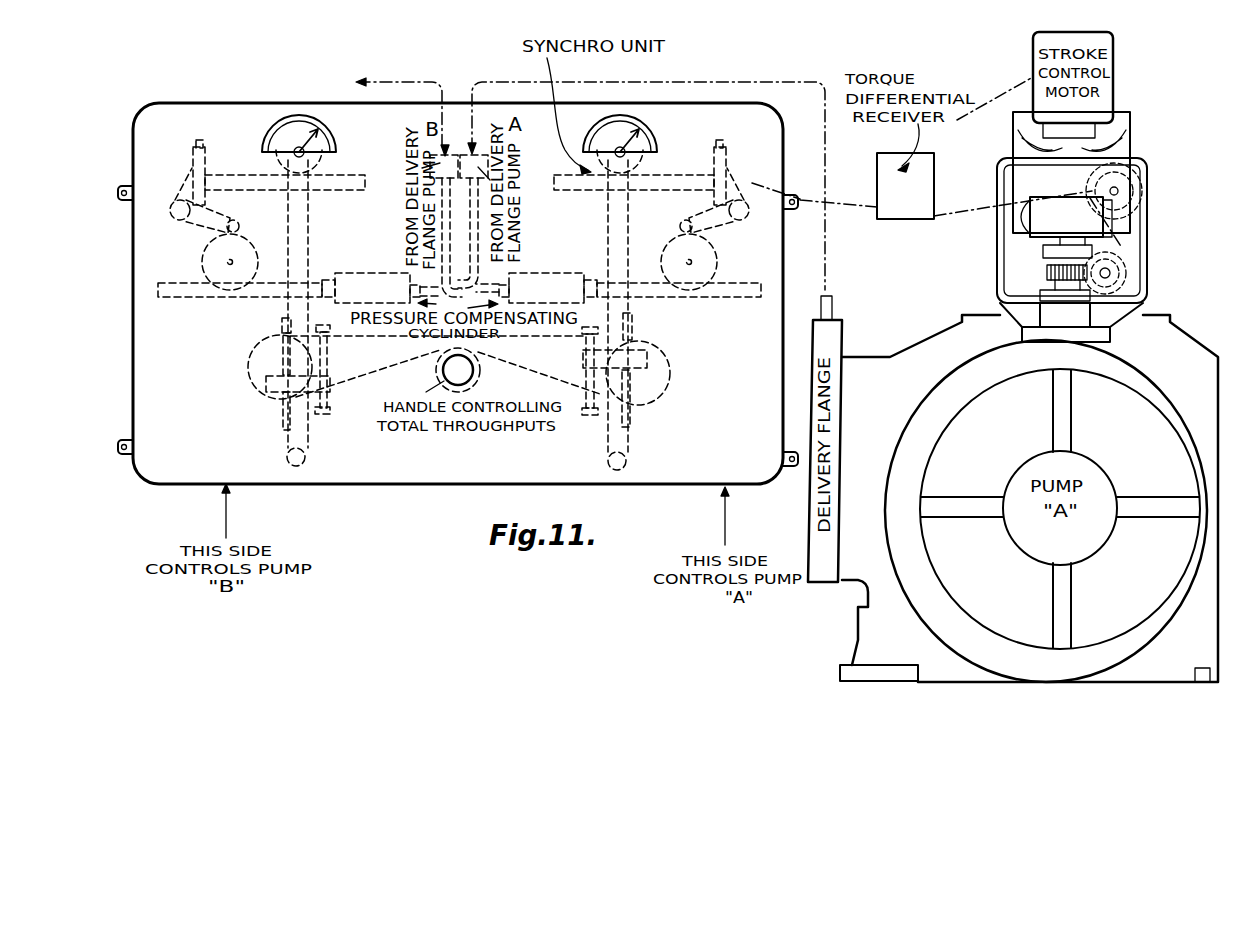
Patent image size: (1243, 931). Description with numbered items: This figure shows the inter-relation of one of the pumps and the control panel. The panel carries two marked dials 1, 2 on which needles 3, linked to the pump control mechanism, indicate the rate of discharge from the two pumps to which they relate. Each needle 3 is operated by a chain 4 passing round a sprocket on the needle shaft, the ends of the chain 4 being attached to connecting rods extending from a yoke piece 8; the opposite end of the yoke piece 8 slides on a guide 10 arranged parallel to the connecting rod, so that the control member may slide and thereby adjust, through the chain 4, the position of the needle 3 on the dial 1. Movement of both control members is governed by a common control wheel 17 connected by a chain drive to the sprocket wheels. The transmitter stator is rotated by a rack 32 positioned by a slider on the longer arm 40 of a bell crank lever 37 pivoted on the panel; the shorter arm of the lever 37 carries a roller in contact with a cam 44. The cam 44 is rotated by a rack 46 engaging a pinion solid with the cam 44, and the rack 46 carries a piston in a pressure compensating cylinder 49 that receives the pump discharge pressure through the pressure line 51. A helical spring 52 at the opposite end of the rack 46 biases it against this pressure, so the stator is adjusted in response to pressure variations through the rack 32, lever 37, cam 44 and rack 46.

The dial 1 is at (331, 138).
The dial 2 is at (652, 131).
The needle 3 is at (625, 144).
The chain 4 is at (636, 215).
The yoke piece 8 is at (640, 375).
The guide 10 is at (584, 374).
The common control wheel 17 is at (443, 369).
The rack 32 is at (670, 183).
The bell crank lever 37 is at (718, 232).
The longer arm 40 is at (733, 178).
The cam 44 is at (662, 260).
The rack 46 is at (687, 303).
The pressure compensating cylinder 49 is at (562, 272).
The pressure line 51 is at (459, 229).
The helical spring 52 is at (460, 137).